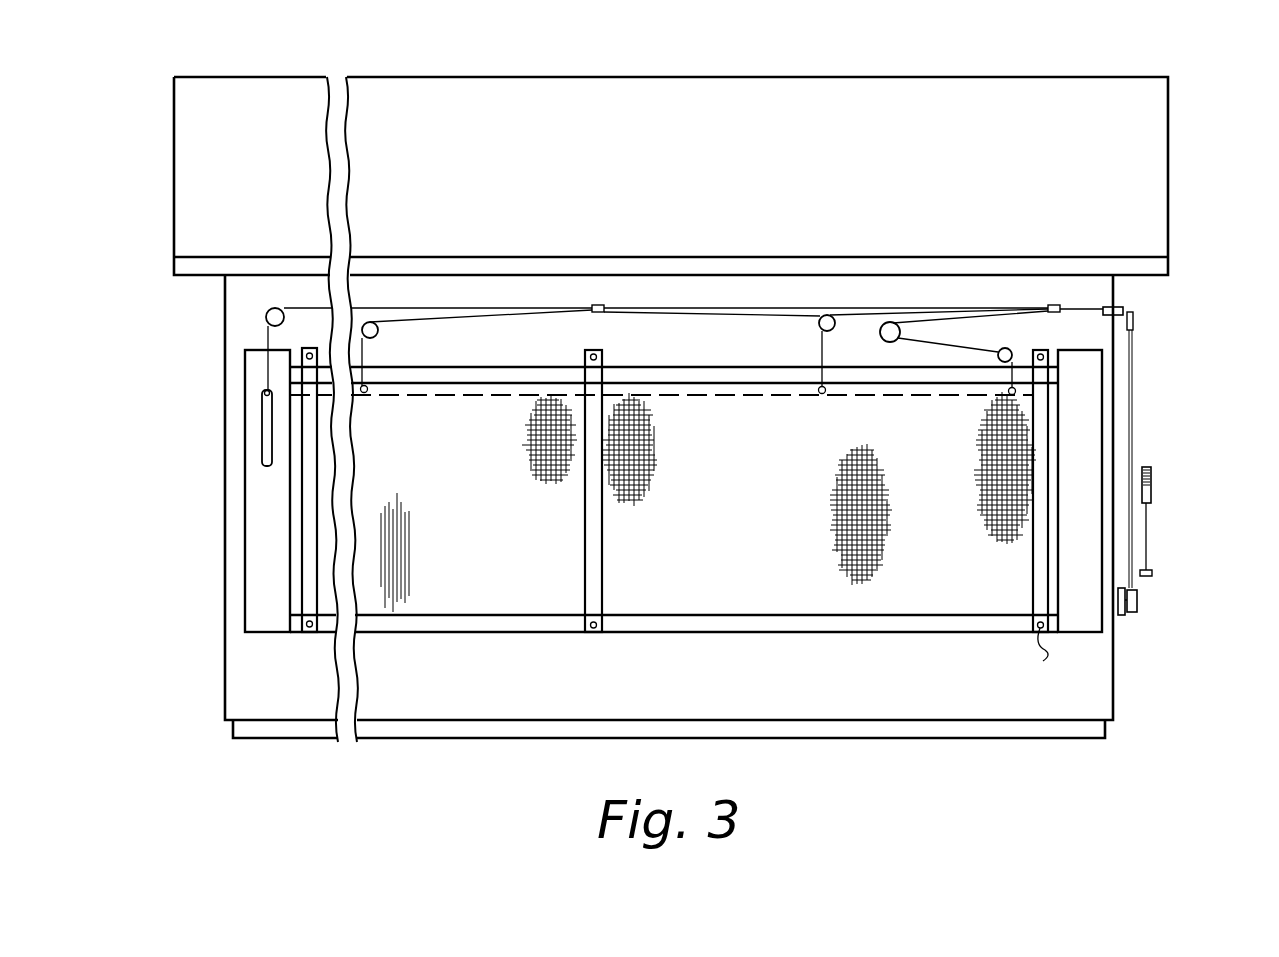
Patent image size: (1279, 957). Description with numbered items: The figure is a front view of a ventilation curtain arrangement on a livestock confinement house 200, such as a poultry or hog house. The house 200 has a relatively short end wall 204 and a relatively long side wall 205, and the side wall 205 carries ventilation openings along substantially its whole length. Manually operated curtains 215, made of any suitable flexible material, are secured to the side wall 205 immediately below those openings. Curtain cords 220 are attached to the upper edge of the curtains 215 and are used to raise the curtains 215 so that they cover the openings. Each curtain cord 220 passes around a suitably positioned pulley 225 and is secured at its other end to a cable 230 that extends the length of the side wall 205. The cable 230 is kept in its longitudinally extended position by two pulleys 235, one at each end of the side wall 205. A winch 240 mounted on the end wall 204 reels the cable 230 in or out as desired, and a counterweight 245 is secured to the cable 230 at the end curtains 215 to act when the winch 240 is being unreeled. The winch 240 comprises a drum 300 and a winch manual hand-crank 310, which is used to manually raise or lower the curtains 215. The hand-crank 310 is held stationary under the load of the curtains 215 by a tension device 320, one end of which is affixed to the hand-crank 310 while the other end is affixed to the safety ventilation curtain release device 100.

The livestock confinement house 200 is at (789, 55).
The end wall 204 is at (1115, 690).
The side wall 205 is at (428, 708).
The curtain 215 is at (475, 469).
The curtain cord 220 is at (407, 308).
The pulley 225 is at (836, 318).
The cable 230 is at (665, 307).
The pulley 235 is at (270, 306).
The winch 240 is at (1168, 601).
The counterweight 245 is at (262, 428).
The safety ventilation curtain release device 100 is at (1170, 480).
The drum 300 is at (1130, 618).
The winch manual hand-crank 310 is at (1140, 593).
The tension device 320 is at (1146, 545).